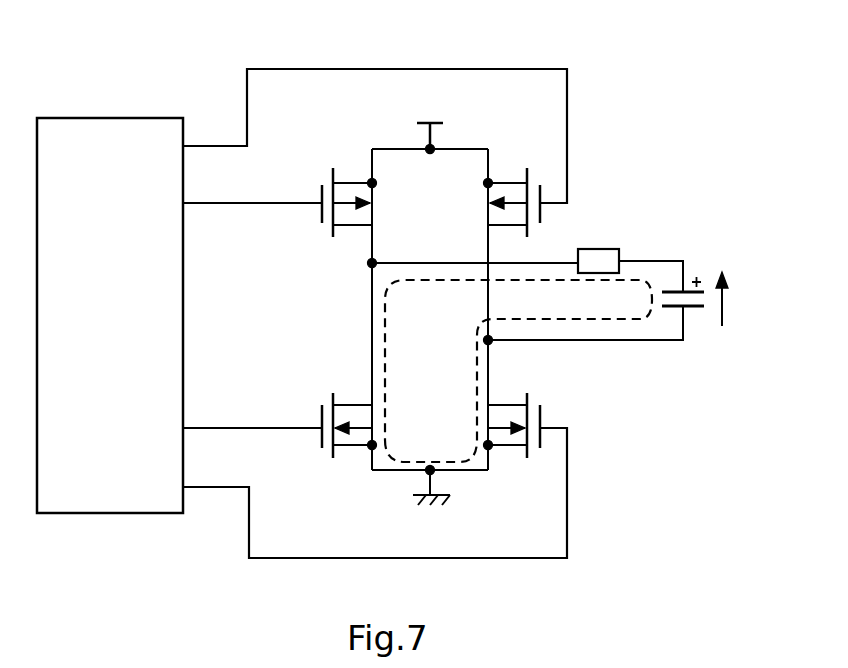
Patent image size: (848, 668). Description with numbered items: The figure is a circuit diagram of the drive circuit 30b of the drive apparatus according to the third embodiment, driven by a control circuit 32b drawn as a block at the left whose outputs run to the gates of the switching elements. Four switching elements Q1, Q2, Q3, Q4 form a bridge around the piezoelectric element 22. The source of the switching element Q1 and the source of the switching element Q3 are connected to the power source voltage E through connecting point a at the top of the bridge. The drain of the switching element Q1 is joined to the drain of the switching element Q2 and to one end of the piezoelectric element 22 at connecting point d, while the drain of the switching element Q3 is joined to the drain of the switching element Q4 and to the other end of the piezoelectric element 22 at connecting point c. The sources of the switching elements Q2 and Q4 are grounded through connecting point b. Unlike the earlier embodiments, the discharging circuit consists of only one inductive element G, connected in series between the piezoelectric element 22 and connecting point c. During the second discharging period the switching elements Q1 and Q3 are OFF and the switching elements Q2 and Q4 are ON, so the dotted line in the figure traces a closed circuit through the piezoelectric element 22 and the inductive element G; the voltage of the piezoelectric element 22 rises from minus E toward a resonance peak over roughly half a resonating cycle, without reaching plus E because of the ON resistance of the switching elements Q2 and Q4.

The control circuit 32b is at (110, 118).
The drive circuit 30b is at (467, 313).
The piezoelectric element 22 is at (697, 313).
The switching element Q1 is at (533, 170).
The switching element Q2 is at (536, 462).
The switching element Q3 is at (330, 170).
The switching element Q4 is at (328, 462).
The inductive element G is at (602, 247).
The power source voltage E is at (430, 119).